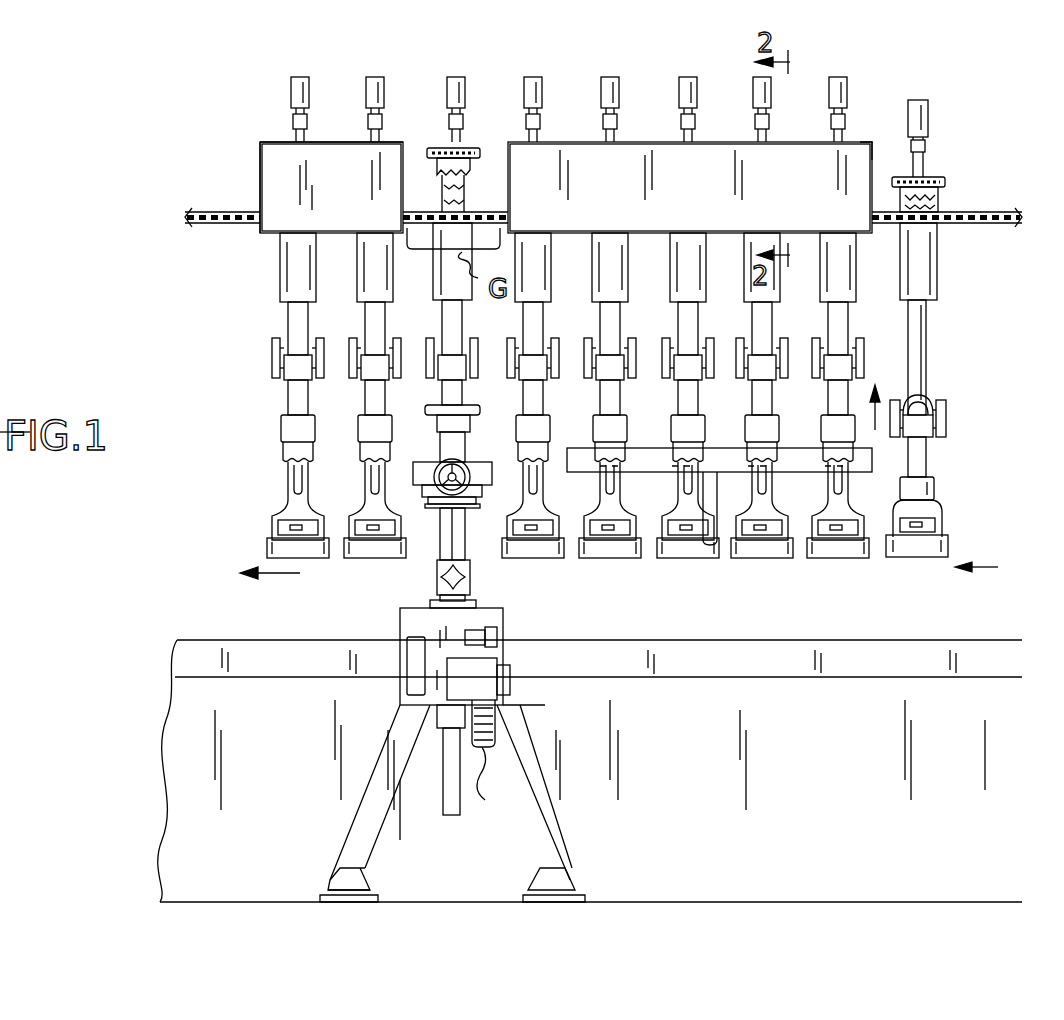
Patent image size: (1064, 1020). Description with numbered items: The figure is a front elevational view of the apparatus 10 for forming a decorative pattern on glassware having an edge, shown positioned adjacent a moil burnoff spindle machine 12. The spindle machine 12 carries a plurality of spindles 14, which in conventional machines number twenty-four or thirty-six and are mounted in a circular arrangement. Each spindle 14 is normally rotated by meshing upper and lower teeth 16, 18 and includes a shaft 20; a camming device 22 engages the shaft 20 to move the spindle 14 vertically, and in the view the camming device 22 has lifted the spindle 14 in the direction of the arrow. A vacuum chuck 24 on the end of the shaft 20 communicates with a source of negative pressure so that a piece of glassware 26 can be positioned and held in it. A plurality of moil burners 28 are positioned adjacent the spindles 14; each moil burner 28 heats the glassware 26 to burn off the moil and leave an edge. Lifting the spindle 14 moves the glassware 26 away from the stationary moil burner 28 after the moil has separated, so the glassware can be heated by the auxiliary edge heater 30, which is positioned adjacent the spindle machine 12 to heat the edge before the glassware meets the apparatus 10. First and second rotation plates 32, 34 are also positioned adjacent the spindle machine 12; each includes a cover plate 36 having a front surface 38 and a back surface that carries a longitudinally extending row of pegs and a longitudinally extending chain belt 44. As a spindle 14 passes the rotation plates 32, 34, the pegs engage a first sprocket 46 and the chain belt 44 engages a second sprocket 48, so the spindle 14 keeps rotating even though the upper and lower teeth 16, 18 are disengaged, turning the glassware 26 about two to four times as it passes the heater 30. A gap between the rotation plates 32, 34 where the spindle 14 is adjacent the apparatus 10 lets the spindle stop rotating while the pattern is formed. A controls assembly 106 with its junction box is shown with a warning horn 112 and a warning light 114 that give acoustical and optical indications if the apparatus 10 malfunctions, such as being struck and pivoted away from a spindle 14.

The apparatus for forming a decorative pattern on glassware 10 is at (505, 628).
The moil burnoff spindle machine 12 is at (962, 130).
The spindle 14 is at (533, 76).
The upper teeth 16 is at (945, 185).
The lower teeth 18 is at (940, 205).
The shaft 20 is at (928, 330).
The camming device 22 is at (945, 420).
The vacuum chuck 24 is at (933, 480).
The glassware 26 is at (935, 515).
The moil burner 28 is at (550, 560).
The auxiliary edge heater 30 is at (804, 472).
The first rotation plate 32 is at (637, 142).
The second rotation plate 34 is at (336, 142).
The cover plate 36 is at (270, 146).
The front surface 38 is at (358, 204).
The chain belt 44 is at (990, 225).
The first sprocket 46 is at (468, 148).
The second sprocket 48 is at (487, 205).
The controls assembly 106 is at (395, 630).
The warning horn 112 is at (508, 684).
The warning light 114 is at (488, 790).